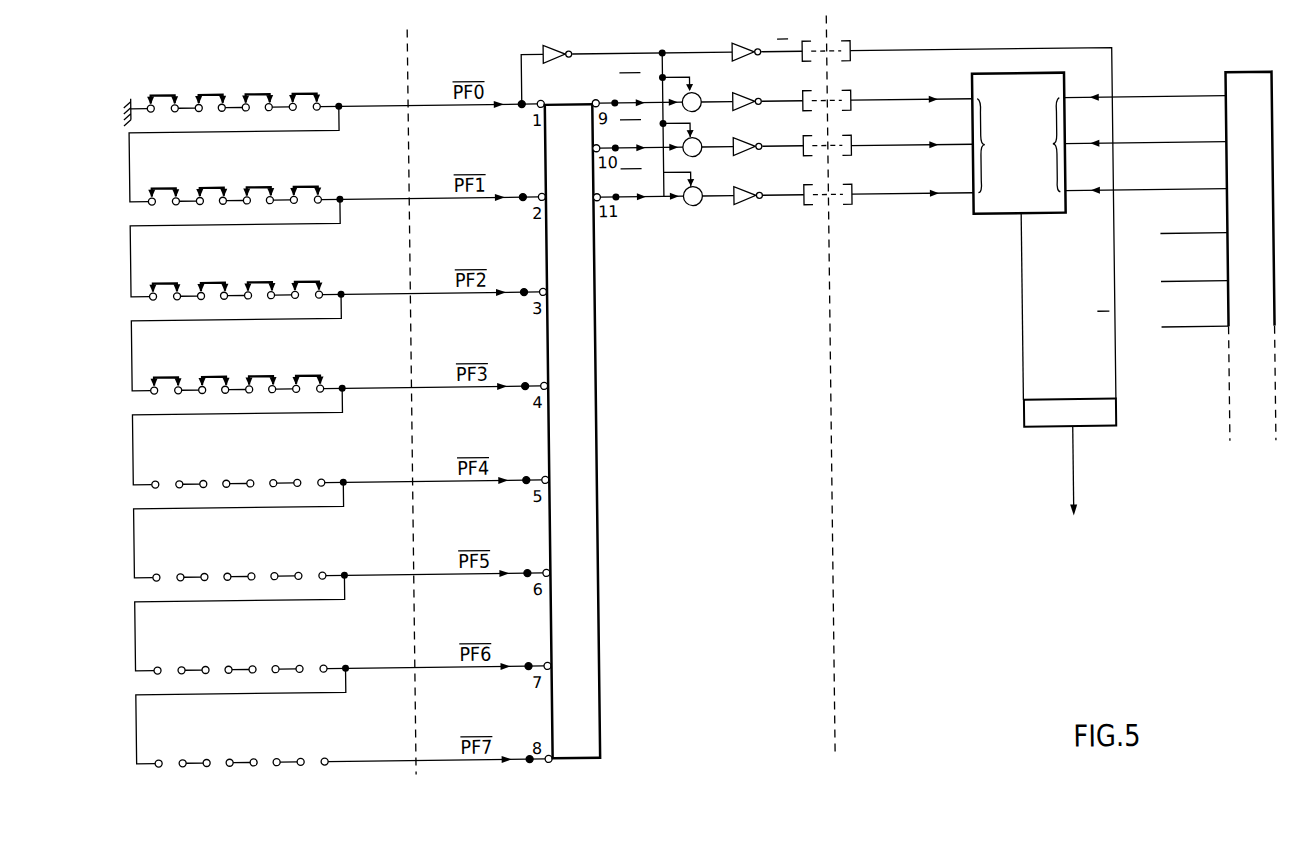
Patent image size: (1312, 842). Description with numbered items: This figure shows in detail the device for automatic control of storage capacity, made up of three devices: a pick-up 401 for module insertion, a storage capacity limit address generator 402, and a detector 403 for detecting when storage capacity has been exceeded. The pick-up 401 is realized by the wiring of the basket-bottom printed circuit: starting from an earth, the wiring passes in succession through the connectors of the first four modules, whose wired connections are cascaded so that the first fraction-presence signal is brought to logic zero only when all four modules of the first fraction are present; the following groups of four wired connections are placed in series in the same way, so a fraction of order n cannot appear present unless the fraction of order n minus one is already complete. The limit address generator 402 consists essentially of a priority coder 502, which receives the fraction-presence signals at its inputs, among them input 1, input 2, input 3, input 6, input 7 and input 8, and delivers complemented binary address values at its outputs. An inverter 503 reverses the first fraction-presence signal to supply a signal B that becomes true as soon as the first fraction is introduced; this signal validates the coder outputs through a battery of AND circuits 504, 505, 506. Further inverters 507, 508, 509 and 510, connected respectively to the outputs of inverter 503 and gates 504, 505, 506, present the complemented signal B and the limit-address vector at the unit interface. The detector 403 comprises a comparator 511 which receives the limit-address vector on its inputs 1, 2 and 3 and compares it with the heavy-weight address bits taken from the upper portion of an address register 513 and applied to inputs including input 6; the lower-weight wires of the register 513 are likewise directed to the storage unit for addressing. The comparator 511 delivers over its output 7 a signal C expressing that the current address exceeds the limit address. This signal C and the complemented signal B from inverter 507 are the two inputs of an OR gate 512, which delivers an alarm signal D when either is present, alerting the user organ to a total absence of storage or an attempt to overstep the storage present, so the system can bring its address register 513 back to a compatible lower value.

The first input 1 is at (331, 396).
The second input 2 is at (595, 428).
The third input 3 is at (686, 113).
The sixth input 6 is at (1043, 458).
The seventh terminal 7 is at (1034, 210).
The eighth input 8 is at (1179, 238).
The pick-up for module insertion 401 is at (329, 74).
The storage capacity limit address generator 402 is at (759, 703).
The detector for detecting when storage capacity has been exceeded 403 is at (945, 655).
The priority coder 502 is at (586, 711).
The inverter 503 is at (557, 60).
The AND circuit 504 is at (698, 94).
The AND circuit 505 is at (700, 141).
The AND circuit 506 is at (701, 190).
The inverter 507 is at (735, 32).
The inverter 508 is at (735, 81).
The inverter 509 is at (735, 128).
The inverter 510 is at (735, 177).
The comparator 511 is at (1014, 76).
The OR gate 512 is at (1084, 434).
The address register 513 is at (1244, 78).